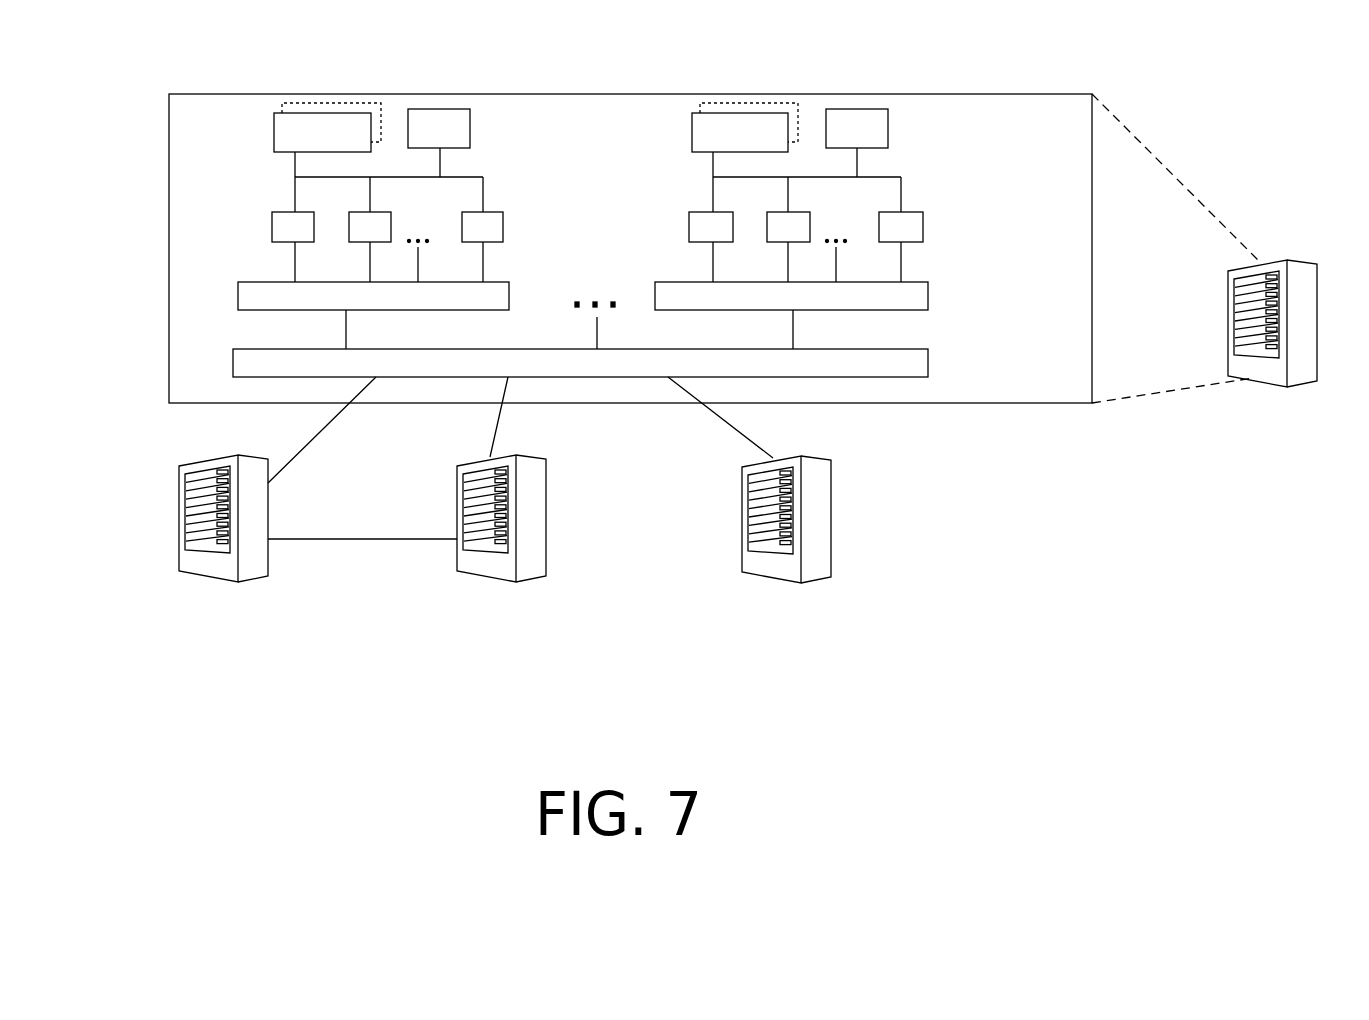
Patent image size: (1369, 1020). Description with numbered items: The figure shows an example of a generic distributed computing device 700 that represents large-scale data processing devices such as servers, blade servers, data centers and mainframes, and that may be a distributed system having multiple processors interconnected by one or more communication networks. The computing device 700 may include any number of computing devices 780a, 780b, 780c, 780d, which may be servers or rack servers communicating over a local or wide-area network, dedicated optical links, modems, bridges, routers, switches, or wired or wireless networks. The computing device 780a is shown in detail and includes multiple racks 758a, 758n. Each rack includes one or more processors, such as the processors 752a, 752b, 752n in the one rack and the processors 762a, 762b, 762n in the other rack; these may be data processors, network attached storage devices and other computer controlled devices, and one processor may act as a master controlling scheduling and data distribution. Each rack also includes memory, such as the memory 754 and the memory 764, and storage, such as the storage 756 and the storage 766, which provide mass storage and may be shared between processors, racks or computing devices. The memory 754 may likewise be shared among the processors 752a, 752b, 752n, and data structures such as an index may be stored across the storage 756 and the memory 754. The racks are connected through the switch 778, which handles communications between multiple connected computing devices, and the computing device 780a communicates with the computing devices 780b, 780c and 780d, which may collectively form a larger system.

The computing device 700 is at (167, 81).
The memory 754 is at (327, 157).
The storage 756 is at (439, 143).
The processor 752a is at (272, 227).
The processor 752b is at (391, 219).
The processor 752n is at (503, 227).
The rack 758a is at (373, 315).
The memory 764 is at (745, 157).
The storage 766 is at (857, 143).
The processor 762a is at (689, 227).
The processor 762b is at (810, 219).
The processor 762n is at (923, 227).
The rack 758n is at (791, 315).
The switch 778 is at (580, 416).
The computing device 780a is at (1227, 300).
The computing device 780b is at (178, 508).
The computing device 780c is at (457, 502).
The computing device 780d is at (738, 532).